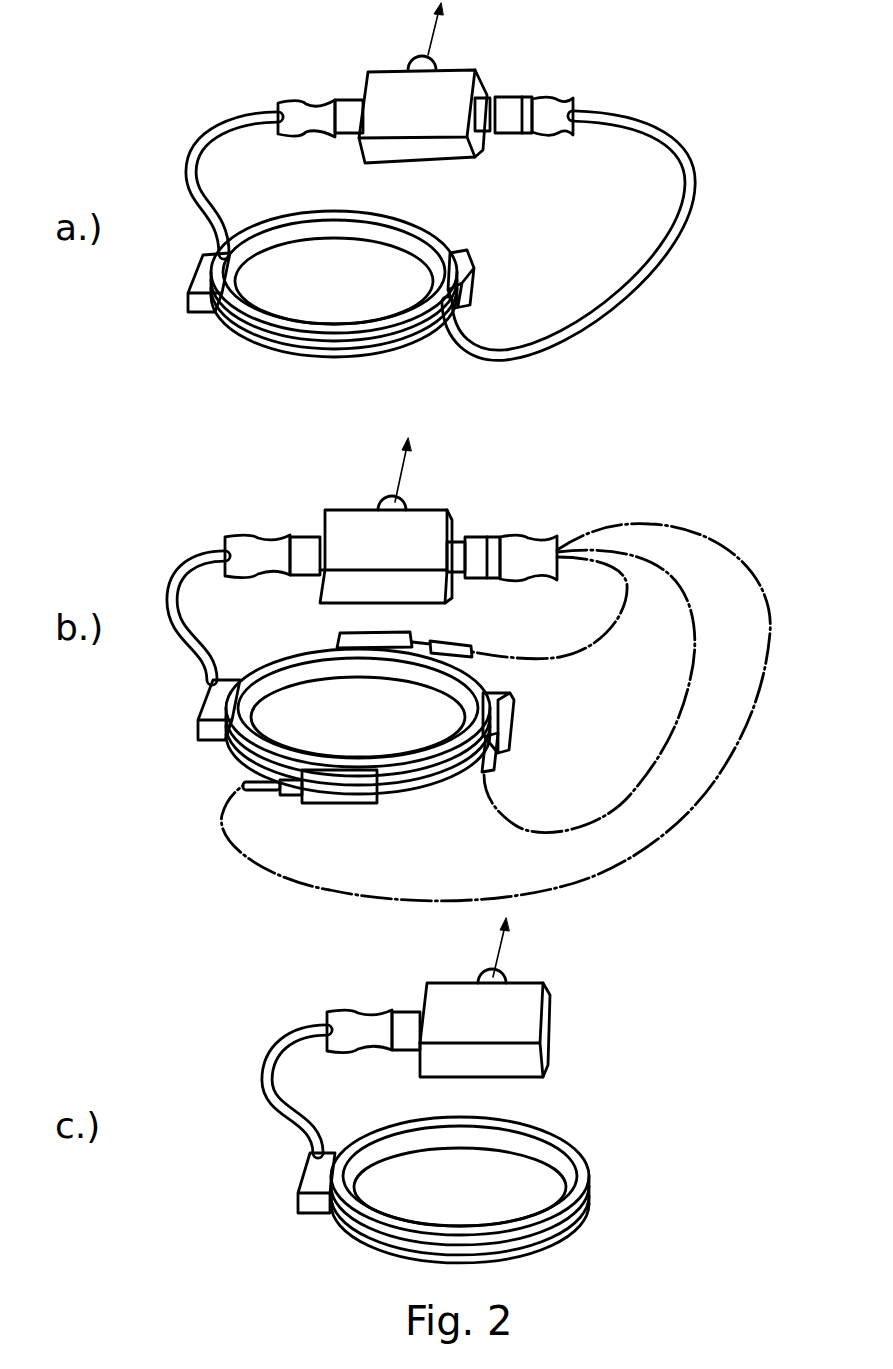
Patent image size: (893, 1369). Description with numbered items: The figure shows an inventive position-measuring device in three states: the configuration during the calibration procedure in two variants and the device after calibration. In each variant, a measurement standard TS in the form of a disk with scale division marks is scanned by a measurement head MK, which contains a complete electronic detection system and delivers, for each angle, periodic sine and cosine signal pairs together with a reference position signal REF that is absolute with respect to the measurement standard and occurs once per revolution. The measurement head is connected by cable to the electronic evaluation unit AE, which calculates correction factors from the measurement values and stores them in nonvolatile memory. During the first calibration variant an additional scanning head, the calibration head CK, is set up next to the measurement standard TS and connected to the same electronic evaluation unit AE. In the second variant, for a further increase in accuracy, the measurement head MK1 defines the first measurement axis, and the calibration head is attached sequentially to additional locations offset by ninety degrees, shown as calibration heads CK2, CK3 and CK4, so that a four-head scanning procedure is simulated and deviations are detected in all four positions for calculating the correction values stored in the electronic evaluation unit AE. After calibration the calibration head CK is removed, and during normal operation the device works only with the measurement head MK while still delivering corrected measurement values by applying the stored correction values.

The electronic evaluation unit AE is at (395, 97).
The measurement head MK is at (207, 280).
The measurement head MK1 is at (215, 692).
The measurement standard TS is at (240, 337).
The reference position signal REF is at (383, 338).
The calibration head CK is at (470, 258).
The calibration head CK2 is at (498, 710).
The calibration head CK3 is at (347, 788).
The calibration head CK4 is at (353, 642).